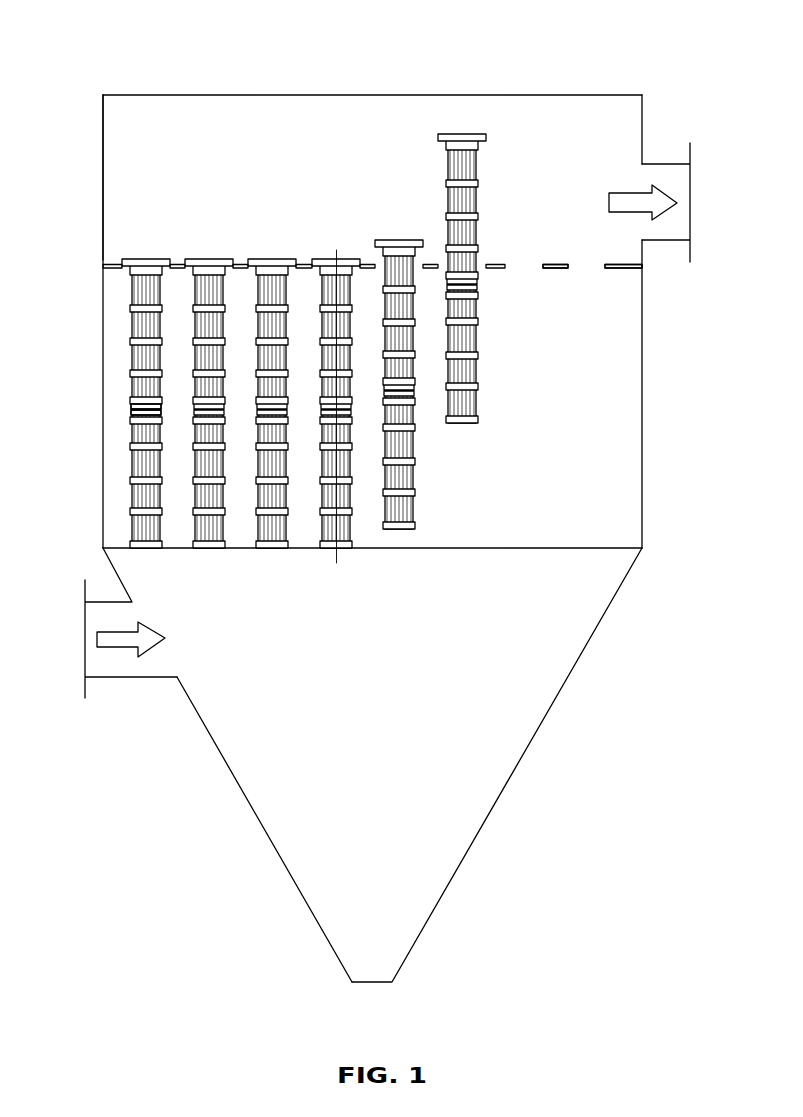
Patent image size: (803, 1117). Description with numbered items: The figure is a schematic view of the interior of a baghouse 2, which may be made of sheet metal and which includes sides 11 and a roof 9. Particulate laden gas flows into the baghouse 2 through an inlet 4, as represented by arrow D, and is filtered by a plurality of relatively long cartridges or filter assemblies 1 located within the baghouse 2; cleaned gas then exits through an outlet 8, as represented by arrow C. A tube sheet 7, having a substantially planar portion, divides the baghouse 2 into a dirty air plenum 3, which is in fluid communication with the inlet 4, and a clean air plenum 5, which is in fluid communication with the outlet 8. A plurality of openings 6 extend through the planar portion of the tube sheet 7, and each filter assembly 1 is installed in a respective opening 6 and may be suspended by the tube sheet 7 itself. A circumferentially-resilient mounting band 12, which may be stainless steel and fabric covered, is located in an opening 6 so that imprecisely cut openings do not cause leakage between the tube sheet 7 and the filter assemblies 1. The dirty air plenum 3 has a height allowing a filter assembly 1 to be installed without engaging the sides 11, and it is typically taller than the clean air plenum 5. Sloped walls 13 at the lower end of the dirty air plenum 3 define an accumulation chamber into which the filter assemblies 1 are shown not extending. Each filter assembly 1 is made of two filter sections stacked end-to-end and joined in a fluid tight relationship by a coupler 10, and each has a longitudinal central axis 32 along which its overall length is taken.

The filter assembly 1 is at (149, 247).
The baghouse 2 is at (578, 768).
The dirty air plenum 3 is at (605, 505).
The inlet 4 is at (85, 590).
The clean air plenum 5 is at (113, 123).
The opening 6 is at (519, 260).
The tube sheet 7 is at (617, 262).
The outlet 8 is at (690, 148).
The roof 9 is at (197, 95).
The coupler 10 is at (128, 408).
The sides 11 is at (103, 418).
The circumferentially-resilient mounting band 12 is at (505, 268).
The sloped walls 13 is at (223, 758).
The longitudinal central axis 32 is at (338, 556).
The arrow C is at (627, 190).
The arrow D is at (125, 648).